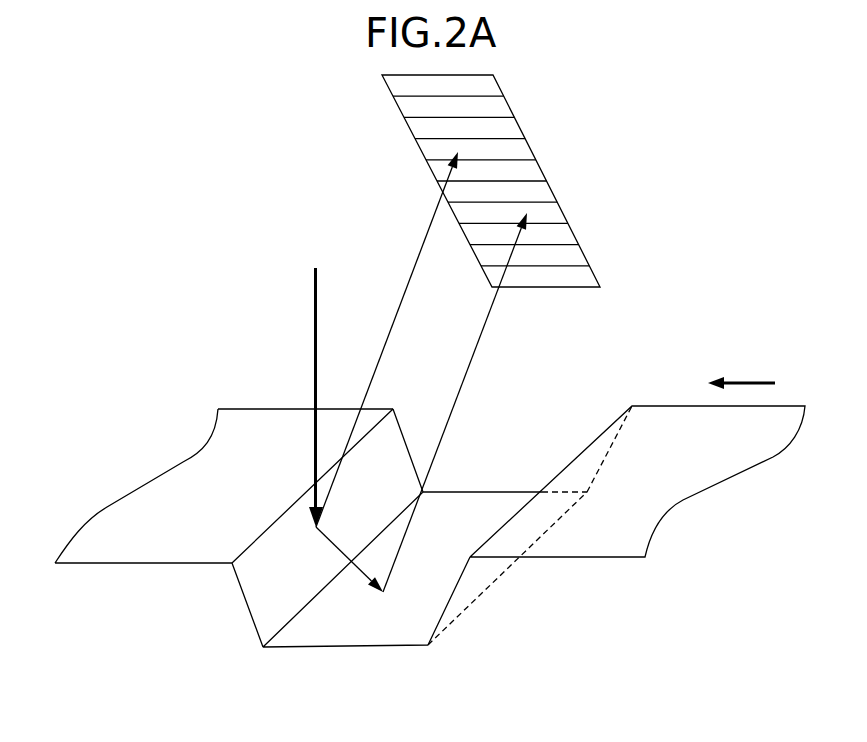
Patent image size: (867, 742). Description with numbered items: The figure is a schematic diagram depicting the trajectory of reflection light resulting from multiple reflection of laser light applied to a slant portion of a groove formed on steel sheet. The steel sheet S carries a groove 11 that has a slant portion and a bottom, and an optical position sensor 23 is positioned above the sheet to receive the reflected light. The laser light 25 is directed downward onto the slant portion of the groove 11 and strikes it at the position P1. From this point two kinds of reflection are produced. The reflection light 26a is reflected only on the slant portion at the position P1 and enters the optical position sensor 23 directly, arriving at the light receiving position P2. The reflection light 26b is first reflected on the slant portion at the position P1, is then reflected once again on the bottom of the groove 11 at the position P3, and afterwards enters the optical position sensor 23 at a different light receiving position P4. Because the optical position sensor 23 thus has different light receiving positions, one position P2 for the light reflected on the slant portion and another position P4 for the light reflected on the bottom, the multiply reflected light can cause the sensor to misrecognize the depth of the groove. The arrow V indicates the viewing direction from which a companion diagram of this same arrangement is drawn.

The groove 11 is at (396, 650).
The optical position sensor 23 is at (530, 148).
The laser light 25 is at (313, 320).
The reflection light 26a is at (393, 320).
The reflection light 26b is at (465, 378).
The position on slant portion P1 is at (314, 529).
The light receiving position P2 is at (458, 152).
The position on bottom P3 is at (386, 591).
The light receiving position P4 is at (528, 214).
The steel sheet S is at (113, 517).
The arrow V is at (741, 373).